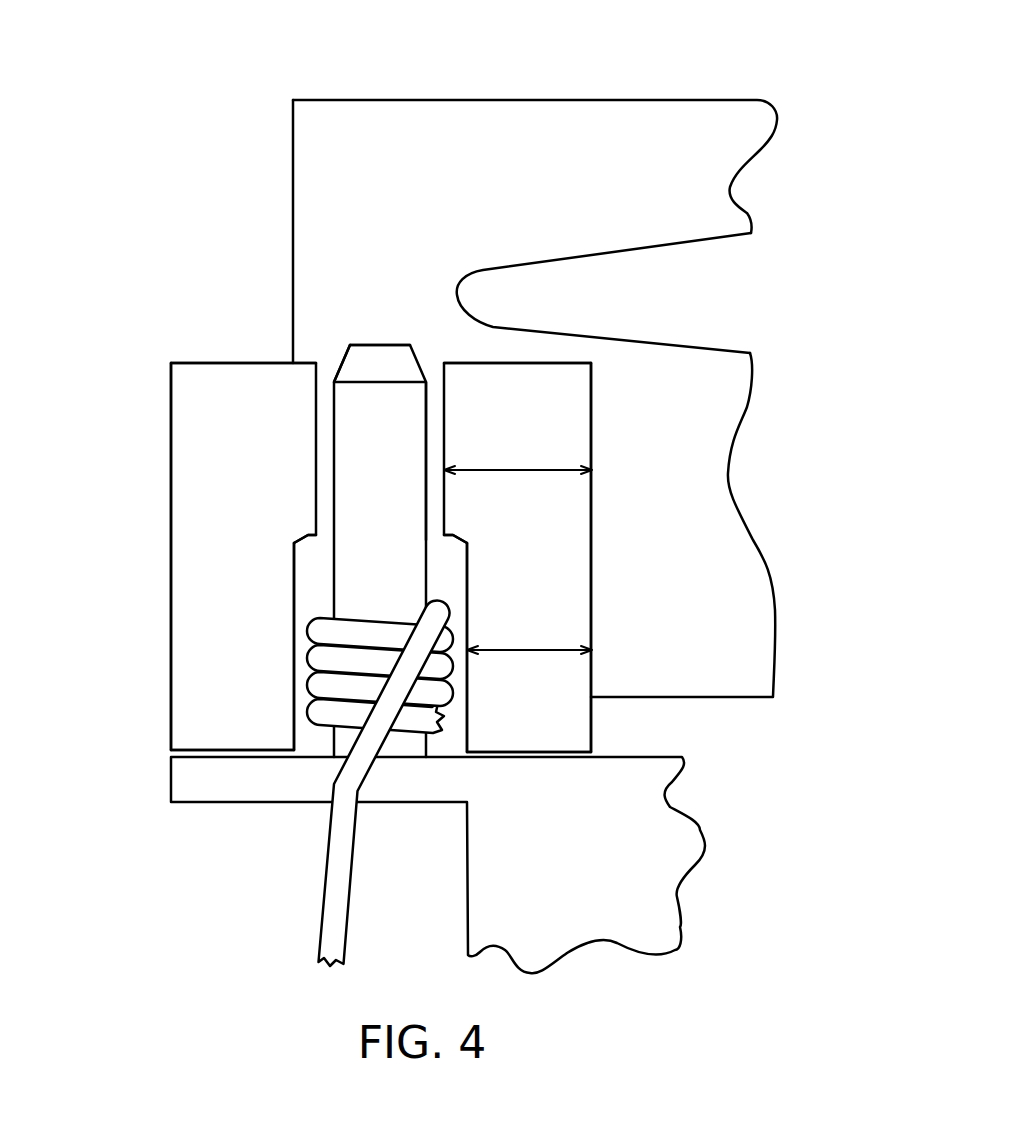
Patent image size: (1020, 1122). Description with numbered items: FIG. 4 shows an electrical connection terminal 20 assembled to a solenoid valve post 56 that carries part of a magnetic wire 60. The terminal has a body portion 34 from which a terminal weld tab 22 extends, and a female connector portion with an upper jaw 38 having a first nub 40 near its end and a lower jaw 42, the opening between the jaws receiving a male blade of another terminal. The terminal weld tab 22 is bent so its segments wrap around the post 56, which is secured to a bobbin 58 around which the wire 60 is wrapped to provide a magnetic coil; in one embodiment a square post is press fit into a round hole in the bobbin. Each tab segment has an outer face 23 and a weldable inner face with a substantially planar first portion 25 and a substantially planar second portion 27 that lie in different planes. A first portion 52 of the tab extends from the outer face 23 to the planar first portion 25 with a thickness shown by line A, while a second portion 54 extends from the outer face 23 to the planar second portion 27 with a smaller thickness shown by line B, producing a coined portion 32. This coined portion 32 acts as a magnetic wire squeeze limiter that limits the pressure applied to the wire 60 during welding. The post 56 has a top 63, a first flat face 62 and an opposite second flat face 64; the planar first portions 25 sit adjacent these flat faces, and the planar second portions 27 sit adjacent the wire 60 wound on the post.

The electrical connection terminal 20 is at (487, 83).
The terminal weld tab 22 is at (147, 497).
The outer face 23 is at (171, 640).
The substantially planar first portion 25 is at (313, 432).
The substantially planar second portion 27 is at (303, 568).
The coined portion 32 is at (293, 637).
The body portion 34 is at (343, 128).
The upper jaw 38 is at (627, 140).
The first nub 40 is at (576, 303).
The lower jaw 42 is at (697, 465).
The first portion 52 is at (199, 396).
The second portion 54 is at (200, 697).
The post 56 is at (360, 508).
The bobbin 58 is at (222, 783).
The wire 60 is at (325, 897).
The first flat face 62 is at (330, 405).
The top 63 is at (380, 345).
The second flat face 64 is at (445, 416).
The line A is at (508, 470).
The line B is at (532, 650).